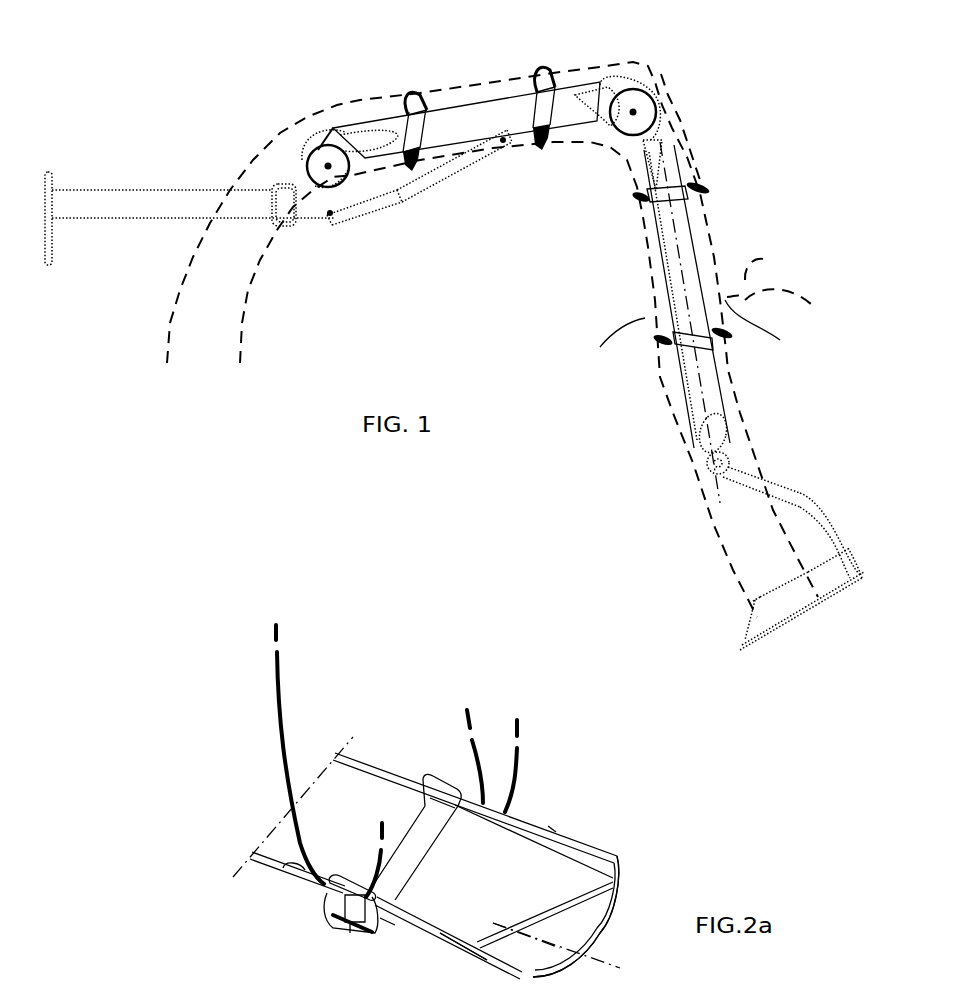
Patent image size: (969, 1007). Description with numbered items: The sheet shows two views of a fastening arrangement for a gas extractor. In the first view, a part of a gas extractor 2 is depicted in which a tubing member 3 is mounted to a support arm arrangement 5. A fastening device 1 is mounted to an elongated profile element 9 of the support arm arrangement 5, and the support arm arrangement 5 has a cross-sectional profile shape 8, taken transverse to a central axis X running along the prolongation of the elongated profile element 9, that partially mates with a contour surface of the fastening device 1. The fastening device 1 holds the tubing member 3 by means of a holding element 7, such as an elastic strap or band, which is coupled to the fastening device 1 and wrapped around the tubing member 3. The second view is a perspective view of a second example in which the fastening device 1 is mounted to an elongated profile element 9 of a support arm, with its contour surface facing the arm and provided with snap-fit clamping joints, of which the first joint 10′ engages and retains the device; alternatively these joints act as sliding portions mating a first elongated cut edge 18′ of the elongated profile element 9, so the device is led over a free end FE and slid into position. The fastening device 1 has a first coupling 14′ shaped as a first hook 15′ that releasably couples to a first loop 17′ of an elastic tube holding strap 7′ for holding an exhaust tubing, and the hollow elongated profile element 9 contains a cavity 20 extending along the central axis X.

In FIG. 1, the fastening device 1 is at (660, 336).
In FIG. 2a, the fastening device 1 is at (460, 790).
In FIG. 1, the gas extractor 2 is at (728, 110).
In FIG. 1, the tubing member 3 is at (769, 280).
In FIG. 1, the support arm arrangement 5 is at (658, 240).
In FIG. 1, the holding element 7 is at (720, 330).
In FIG. 1, the cross-sectional profile shape 8 is at (681, 281).
In FIG. 1, the elongated profile element 9 is at (480, 113).
In FIG. 2a, the elongated profile element 9 is at (632, 893).
In FIG. 1, the central axis X is at (775, 320).
In FIG. 2a, the central axis X is at (537, 940).
In FIG. 2a, the elastic tube holding strap 7′ is at (289, 712).
In FIG. 2a, the first snap-fit clamping joint 10′ is at (425, 772).
In FIG. 2a, the first elongated cut edge 18′ is at (470, 912).
In FIG. 2a, the first coupling 14′ is at (352, 868).
In FIG. 2a, the first hook 15′ is at (333, 897).
In FIG. 2a, the first loop 17′ is at (312, 868).
In FIG. 2a, the cavity 20 is at (582, 936).
In FIG. 2a, the free end FE is at (620, 930).